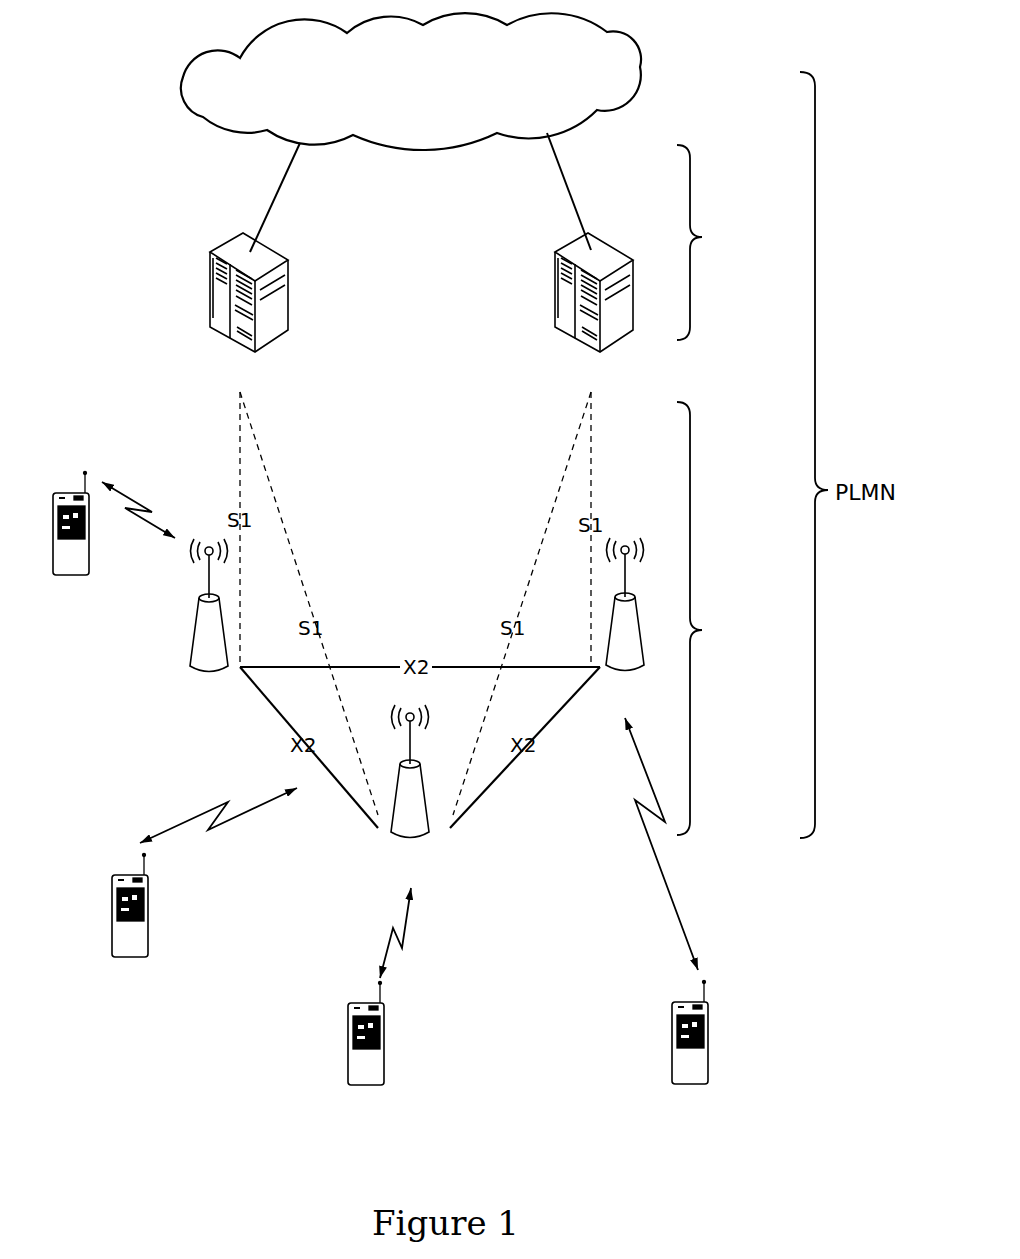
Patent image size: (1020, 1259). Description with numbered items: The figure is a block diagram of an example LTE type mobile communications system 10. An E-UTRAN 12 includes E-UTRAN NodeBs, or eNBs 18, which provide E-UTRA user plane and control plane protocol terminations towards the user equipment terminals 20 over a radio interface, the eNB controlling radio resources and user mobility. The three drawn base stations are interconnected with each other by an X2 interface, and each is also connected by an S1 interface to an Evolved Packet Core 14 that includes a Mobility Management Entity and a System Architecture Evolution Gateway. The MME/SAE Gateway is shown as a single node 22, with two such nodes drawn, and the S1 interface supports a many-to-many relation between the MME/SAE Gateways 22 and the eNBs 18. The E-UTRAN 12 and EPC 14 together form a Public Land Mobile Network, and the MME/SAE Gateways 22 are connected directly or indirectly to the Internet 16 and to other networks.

The LTE type mobile communications system 10 is at (110, 259).
The E-UTRAN 12 is at (741, 618).
The Evolved Packet Core 14 is at (714, 242).
The Internet 16 is at (633, 36).
The E-UTRAN NodeB 18 is at (202, 637).
The user equipment terminal 20 is at (60, 497).
The MME/SAE Gateway 22 is at (278, 298).